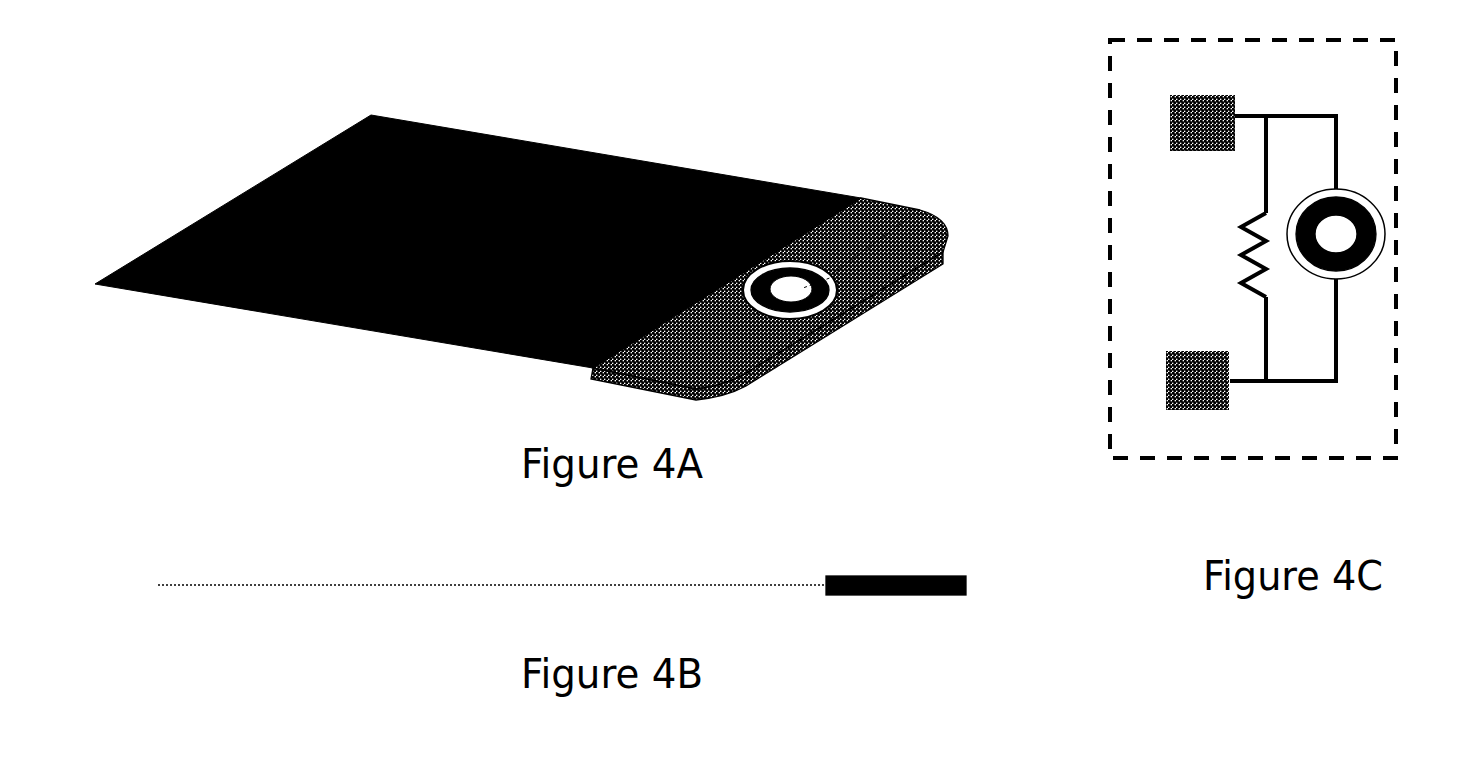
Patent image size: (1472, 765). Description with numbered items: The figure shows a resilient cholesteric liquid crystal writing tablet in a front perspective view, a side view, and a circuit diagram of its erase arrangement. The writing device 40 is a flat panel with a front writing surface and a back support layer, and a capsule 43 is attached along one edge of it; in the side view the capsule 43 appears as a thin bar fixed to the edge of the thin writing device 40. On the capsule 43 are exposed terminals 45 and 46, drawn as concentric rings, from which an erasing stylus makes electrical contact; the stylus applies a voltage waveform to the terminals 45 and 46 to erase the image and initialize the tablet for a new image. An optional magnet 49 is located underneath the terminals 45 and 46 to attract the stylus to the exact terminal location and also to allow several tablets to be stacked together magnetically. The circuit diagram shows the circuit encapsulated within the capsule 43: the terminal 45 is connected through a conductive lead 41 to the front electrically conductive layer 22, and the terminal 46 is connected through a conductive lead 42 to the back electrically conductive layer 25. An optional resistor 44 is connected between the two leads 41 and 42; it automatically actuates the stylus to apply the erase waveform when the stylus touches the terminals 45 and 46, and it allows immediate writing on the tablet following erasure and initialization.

In FIG. 4C, the front electrically conductive layer 22 is at (1167, 100).
In FIG. 4C, the back electrically conductive layer 25 is at (1165, 370).
In FIG. 4A, the writing device 40 is at (423, 233).
In FIG. 4B, the writing device 40 is at (383, 577).
In FIG. 4C, the conductive lead 41 is at (1330, 138).
In FIG. 4C, the conductive lead 42 is at (1330, 325).
In FIG. 4A, the capsule 43 is at (824, 310).
In FIG. 4B, the capsule 43 is at (845, 567).
In FIG. 4C, the resistor 44 is at (1245, 282).
In FIG. 4A, the terminal 45 is at (915, 200).
In FIG. 4C, the terminal 45 is at (1372, 208).
In FIG. 4A, the terminal 46 is at (940, 233).
In FIG. 4C, the terminal 46 is at (1327, 228).
In FIG. 4A, the magnet 49 is at (783, 257).